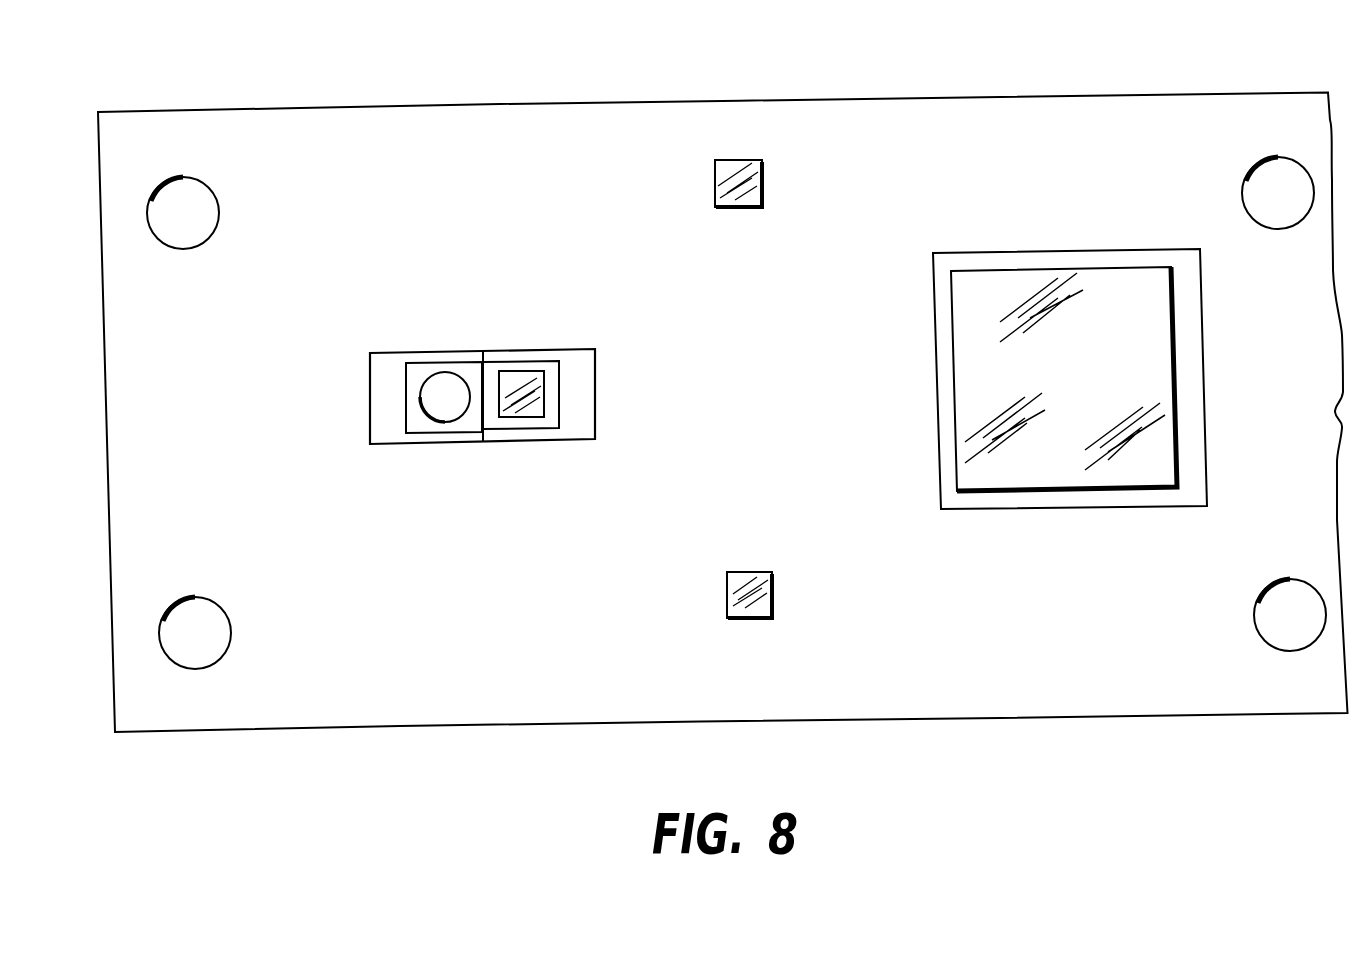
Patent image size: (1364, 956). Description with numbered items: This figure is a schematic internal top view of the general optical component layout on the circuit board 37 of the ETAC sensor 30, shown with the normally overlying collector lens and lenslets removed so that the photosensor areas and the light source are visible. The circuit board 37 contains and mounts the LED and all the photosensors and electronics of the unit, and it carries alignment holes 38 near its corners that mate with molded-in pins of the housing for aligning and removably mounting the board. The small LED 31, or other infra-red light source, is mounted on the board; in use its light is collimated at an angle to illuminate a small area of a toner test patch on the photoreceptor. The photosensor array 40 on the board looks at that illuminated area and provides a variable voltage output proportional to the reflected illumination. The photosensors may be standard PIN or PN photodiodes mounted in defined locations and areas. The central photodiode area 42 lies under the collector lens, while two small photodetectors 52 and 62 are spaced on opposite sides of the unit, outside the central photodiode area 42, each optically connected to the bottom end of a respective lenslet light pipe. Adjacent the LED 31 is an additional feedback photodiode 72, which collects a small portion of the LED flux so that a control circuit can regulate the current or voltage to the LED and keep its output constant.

The ETAC sensor 30 is at (895, 82).
The circuit board 37 is at (446, 152).
The alignment holes 38 is at (181, 193).
The photosensor array 40 is at (970, 127).
The small photodetector 52 is at (741, 168).
The small photodetector 62 is at (748, 616).
The central photodiode area 42 is at (1075, 477).
The LED 31 is at (446, 410).
The feedback photodiode 72 is at (516, 372).